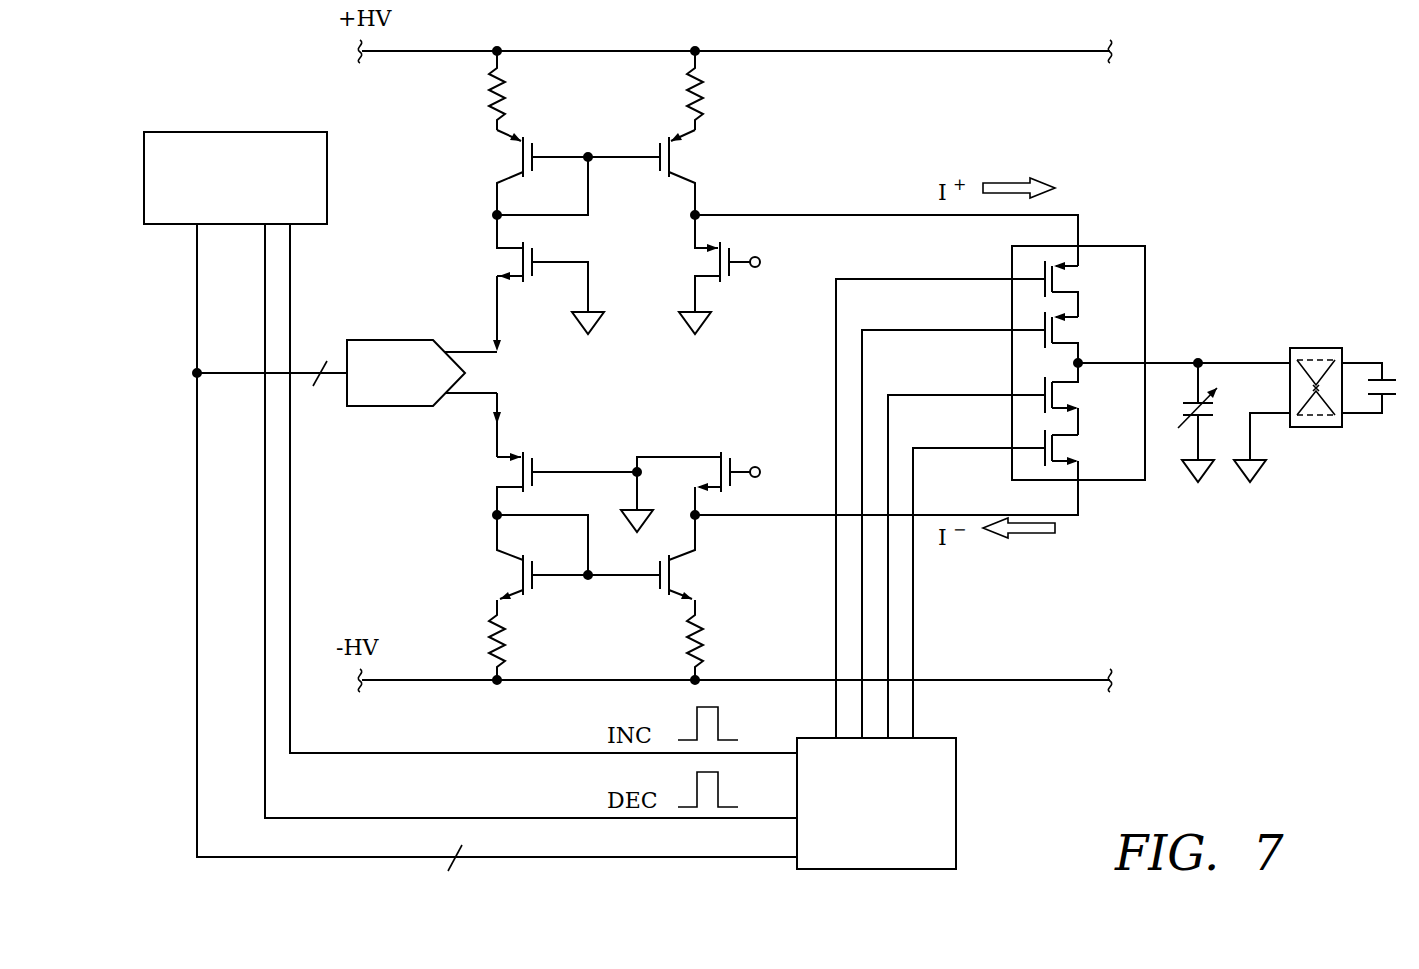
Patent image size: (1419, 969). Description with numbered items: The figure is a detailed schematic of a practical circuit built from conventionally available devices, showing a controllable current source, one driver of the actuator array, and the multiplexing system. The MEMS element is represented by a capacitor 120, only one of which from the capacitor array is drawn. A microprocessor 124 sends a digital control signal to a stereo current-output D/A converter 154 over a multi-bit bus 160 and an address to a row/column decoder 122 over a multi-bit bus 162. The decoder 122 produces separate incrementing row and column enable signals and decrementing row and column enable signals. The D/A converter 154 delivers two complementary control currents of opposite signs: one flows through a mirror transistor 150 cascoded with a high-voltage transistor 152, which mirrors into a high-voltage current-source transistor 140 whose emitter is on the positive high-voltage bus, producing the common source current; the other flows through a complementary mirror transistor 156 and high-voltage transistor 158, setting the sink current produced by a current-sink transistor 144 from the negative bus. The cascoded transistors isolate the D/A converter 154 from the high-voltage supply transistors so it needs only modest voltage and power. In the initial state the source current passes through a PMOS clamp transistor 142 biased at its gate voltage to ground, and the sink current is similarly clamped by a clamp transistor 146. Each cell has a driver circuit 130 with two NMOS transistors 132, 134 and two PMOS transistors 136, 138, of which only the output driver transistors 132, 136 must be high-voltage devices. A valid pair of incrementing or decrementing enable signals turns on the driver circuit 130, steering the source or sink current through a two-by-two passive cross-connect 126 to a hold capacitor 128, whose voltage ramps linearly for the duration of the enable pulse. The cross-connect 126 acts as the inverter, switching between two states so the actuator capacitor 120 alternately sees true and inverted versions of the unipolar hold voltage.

The capacitor 120 is at (1186, 402).
The row/column decoder 122 is at (947, 749).
The microprocessor 124 is at (170, 147).
The passive cross-connect 126 is at (1313, 347).
The hold capacitor 128 is at (1386, 381).
The driver circuit 130 is at (992, 434).
The NMOS transistor 132 is at (1042, 394).
The NMOS transistor 134 is at (1042, 447).
The PMOS transistor 136 is at (1042, 329).
The PMOS transistor 138 is at (1042, 278).
The current-source transistor 140 is at (674, 160).
The clamp transistor 142 is at (743, 265).
The current-sink transistor 144 is at (674, 579).
The clamp transistor 146 is at (741, 466).
The mirror transistor 150 is at (521, 160).
The high-voltage transistor 152 is at (541, 265).
The current-output D/A converter 154 is at (381, 350).
The mirror transistor 156 is at (521, 579).
The high-voltage transistor 158 is at (541, 466).
The multi-bit bus 160 is at (240, 372).
The multi-bit bus 162 is at (198, 792).